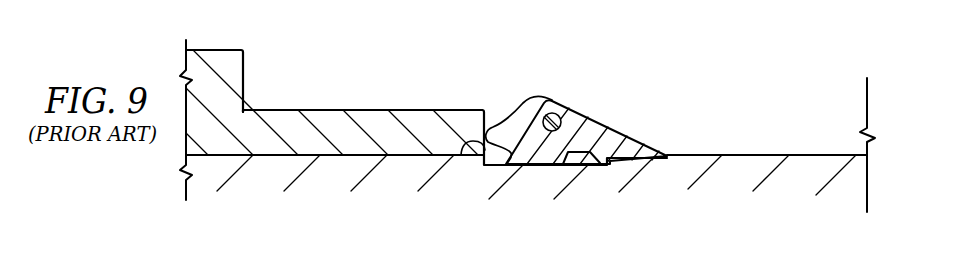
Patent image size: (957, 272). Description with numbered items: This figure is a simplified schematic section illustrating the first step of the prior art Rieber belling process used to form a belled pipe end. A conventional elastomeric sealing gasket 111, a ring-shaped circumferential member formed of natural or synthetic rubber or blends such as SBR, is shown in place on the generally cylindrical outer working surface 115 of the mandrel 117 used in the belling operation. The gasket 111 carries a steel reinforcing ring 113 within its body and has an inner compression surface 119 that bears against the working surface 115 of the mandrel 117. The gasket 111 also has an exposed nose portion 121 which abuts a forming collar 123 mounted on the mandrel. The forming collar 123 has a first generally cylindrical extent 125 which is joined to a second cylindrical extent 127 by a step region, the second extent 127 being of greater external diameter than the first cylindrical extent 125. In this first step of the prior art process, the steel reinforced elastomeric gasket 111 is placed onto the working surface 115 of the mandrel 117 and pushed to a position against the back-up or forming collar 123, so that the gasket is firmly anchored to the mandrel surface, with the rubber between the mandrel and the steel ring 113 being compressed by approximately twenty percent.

The elastomeric sealing gasket 111 is at (614, 130).
The steel reinforcing ring 113 is at (566, 108).
The outer working surface 115 is at (698, 155).
The mandrel 117 is at (805, 158).
The inner compression surface 119 is at (555, 166).
The exposed nose portion 121 is at (461, 156).
The forming collar 123 is at (377, 118).
The first generally cylindrical extent 125 is at (323, 110).
The second cylindrical extent 127 is at (213, 50).